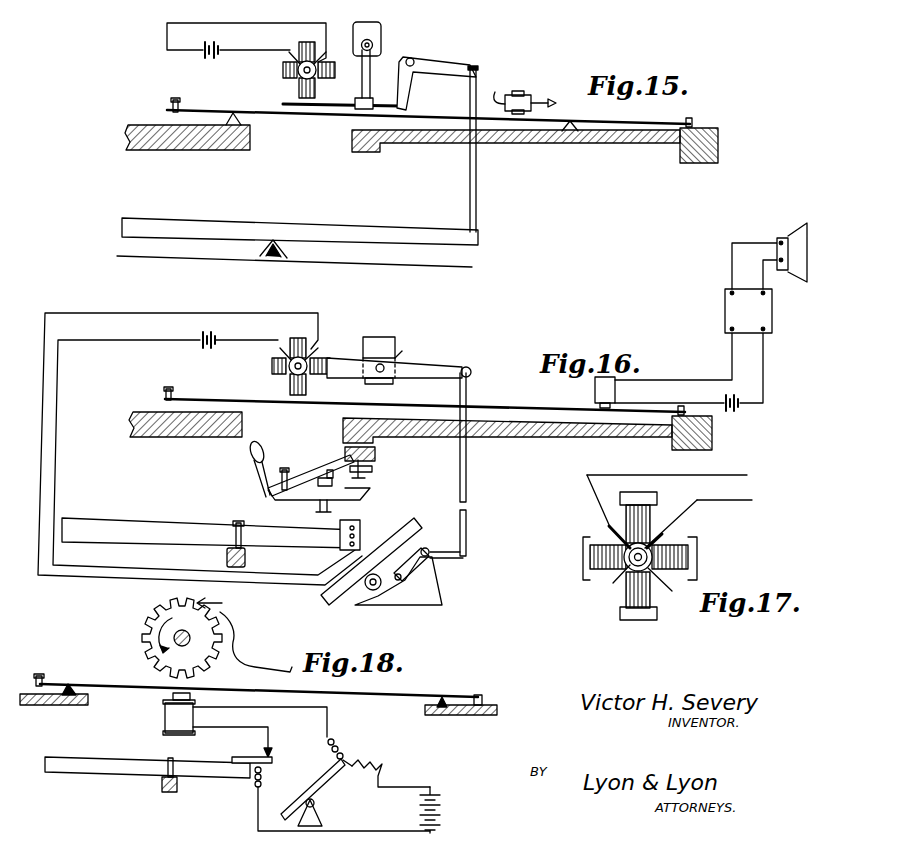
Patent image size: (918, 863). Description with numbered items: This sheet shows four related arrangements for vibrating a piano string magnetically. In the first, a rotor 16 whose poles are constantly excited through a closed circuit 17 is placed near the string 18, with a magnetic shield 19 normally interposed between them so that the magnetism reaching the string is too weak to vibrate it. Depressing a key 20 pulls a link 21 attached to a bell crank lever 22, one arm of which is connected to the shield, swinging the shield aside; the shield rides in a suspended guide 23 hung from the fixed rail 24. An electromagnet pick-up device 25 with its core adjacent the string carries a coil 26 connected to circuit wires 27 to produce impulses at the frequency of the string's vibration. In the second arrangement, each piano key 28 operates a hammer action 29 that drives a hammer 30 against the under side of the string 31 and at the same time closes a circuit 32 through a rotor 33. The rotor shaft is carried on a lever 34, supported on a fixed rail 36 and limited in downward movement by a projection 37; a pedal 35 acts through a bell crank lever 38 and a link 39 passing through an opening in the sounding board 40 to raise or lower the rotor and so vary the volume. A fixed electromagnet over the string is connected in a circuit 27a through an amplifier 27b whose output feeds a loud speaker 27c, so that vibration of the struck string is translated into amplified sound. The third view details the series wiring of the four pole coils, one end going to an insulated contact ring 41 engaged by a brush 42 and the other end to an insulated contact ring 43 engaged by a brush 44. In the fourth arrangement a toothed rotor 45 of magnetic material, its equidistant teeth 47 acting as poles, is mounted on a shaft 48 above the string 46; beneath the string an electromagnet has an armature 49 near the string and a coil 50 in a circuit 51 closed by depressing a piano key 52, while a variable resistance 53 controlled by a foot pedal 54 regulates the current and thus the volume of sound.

In FIG. 15, the rotor 16 is at (291, 79).
In FIG. 15, the closed circuit 17 is at (282, 26).
In FIG. 15, the string 18 is at (331, 118).
In FIG. 15, the magnetic shield 19 is at (353, 102).
In FIG. 15, the key 20 is at (249, 226).
In FIG. 15, the link 21 is at (469, 96).
In FIG. 15, the bell crank lever 22 is at (441, 62).
In FIG. 15, the suspended guide 23 is at (372, 68).
In FIG. 15, the rail 24 is at (382, 33).
In FIG. 15, the electromagnet pick-up device 25 is at (524, 95).
In FIG. 15, the coil 26 is at (492, 89).
In FIG. 15, the circuit wires 27 is at (555, 102).
In FIG. 16, the circuit 27a is at (692, 379).
In FIG. 16, the amplifier 27b is at (728, 306).
In FIG. 16, the loud speaker 27c is at (783, 238).
In FIG. 16, the piano key 28 is at (157, 524).
In FIG. 16, the hammer action 29 is at (260, 496).
In FIG. 16, the hammer 30 is at (266, 455).
In FIG. 16, the string 31 is at (522, 396).
In FIG. 16, the circuit 32 is at (264, 316).
In FIG. 17, the circuit 32 is at (748, 478).
In FIG. 16, the rotor 33 is at (288, 373).
In FIG. 17, the rotor 33 is at (584, 555).
In FIG. 16, the lever 34 is at (446, 368).
In FIG. 16, the pedal 35 is at (406, 530).
In FIG. 16, the rail 36 is at (378, 343).
In FIG. 16, the projection 37 is at (401, 354).
In FIG. 16, the bell crank lever 38 is at (441, 553).
In FIG. 16, the link 39 is at (468, 490).
In FIG. 16, the sounding board 40 is at (549, 434).
In FIG. 17, the insulated contact ring 41 is at (614, 581).
In FIG. 17, the brush 42 is at (682, 516).
In FIG. 17, the insulated contact ring 43 is at (667, 592).
In FIG. 17, the brush 44 is at (606, 528).
In FIG. 18, the rotor 45 is at (148, 622).
In FIG. 18, the string 46 is at (129, 686).
In FIG. 18, the teeth 47 is at (244, 630).
In FIG. 18, the shaft 48 is at (190, 641).
In FIG. 18, the armature 49 is at (172, 696).
In FIG. 18, the coil 50 is at (165, 719).
In FIG. 18, the circuit 51 is at (311, 713).
In FIG. 18, the piano key 52 is at (134, 767).
In FIG. 18, the variable resistance 53 is at (379, 768).
In FIG. 18, the foot pedal 54 is at (318, 783).